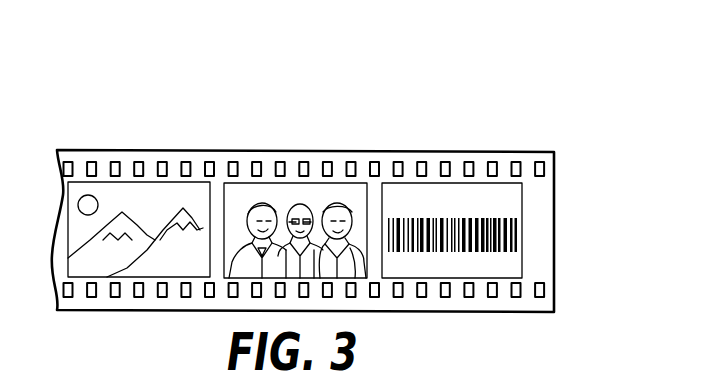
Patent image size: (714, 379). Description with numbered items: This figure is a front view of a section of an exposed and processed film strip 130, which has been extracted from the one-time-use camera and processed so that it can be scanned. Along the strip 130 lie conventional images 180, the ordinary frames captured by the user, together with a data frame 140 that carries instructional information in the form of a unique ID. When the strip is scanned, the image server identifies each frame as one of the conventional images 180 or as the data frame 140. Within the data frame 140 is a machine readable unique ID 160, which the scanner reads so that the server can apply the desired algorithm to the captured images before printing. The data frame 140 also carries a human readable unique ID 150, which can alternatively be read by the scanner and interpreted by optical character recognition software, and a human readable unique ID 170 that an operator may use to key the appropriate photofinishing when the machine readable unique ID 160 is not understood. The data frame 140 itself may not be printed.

The processed film strip 130 is at (541, 148).
The data frame 140 is at (524, 191).
The human readable unique ID 150 is at (517, 203).
The machine readable unique ID 160 is at (518, 233).
The human readable unique ID 170 is at (518, 262).
The conventional images 180 is at (185, 198).